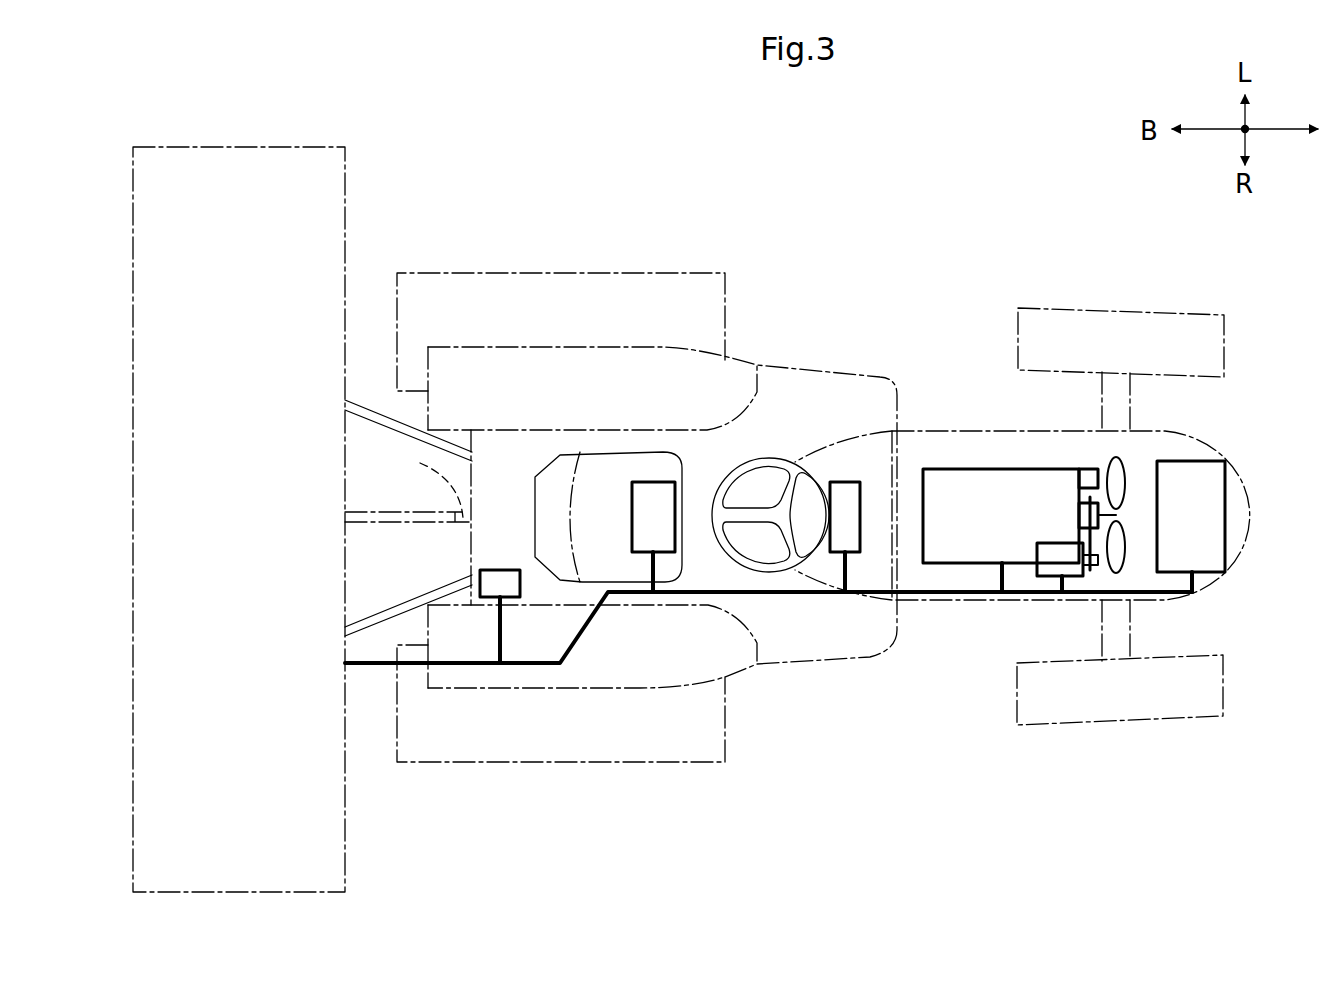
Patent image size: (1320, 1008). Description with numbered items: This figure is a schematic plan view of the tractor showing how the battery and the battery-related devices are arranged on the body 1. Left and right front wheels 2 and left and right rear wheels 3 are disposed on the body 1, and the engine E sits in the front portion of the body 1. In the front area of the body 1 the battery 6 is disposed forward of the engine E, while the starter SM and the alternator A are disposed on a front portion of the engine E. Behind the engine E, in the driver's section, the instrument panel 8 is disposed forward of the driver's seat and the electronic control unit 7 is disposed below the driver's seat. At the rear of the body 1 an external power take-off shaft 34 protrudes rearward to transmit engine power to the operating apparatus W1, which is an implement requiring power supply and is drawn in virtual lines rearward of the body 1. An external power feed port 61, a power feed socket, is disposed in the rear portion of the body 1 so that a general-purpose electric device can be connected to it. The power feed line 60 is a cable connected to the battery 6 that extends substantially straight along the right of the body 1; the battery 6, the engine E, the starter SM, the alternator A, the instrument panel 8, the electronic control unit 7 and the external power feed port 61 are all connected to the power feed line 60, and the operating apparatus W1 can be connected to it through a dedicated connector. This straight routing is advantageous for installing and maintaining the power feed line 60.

The body 1 is at (848, 356).
The front wheels 2 is at (1123, 312).
The rear wheels 3 is at (583, 273).
The battery 6 is at (1225, 515).
The electronic control unit 7 is at (632, 498).
The instrument panel 8 is at (843, 482).
The external power take-off (PTO) shaft 34 is at (421, 480).
The power feed line 60 is at (793, 597).
The external power feed port 61 is at (500, 570).
The engine E is at (975, 469).
The starter SM is at (1088, 469).
The alternator A is at (1043, 576).
The operating apparatus W1 is at (265, 147).